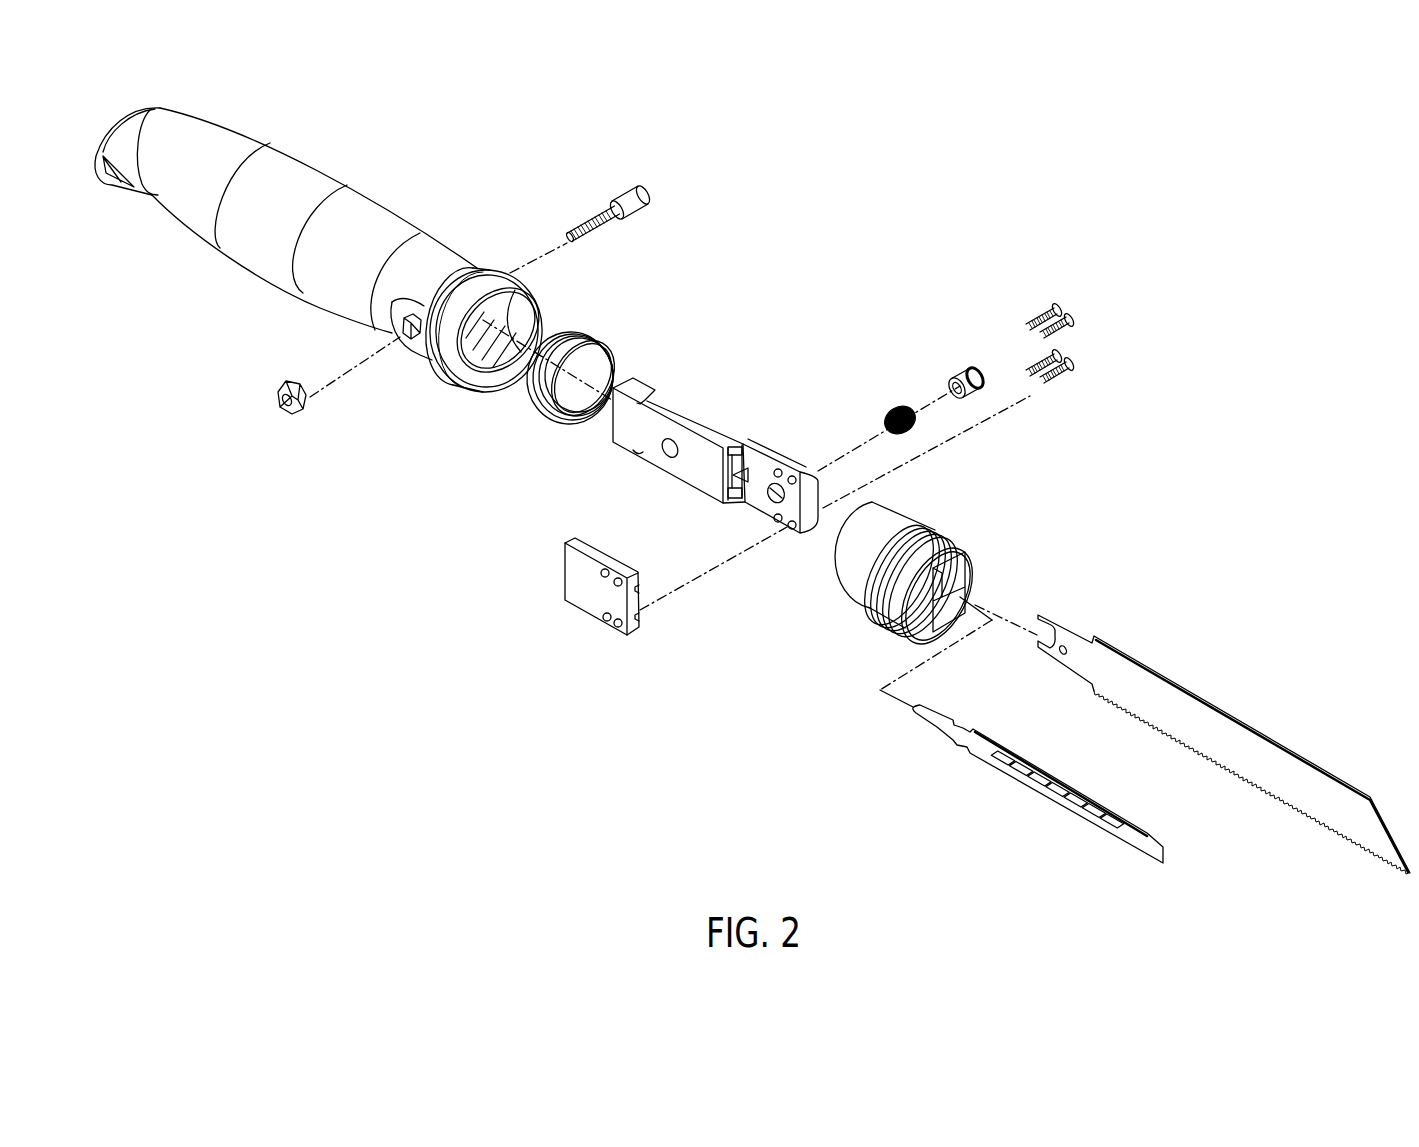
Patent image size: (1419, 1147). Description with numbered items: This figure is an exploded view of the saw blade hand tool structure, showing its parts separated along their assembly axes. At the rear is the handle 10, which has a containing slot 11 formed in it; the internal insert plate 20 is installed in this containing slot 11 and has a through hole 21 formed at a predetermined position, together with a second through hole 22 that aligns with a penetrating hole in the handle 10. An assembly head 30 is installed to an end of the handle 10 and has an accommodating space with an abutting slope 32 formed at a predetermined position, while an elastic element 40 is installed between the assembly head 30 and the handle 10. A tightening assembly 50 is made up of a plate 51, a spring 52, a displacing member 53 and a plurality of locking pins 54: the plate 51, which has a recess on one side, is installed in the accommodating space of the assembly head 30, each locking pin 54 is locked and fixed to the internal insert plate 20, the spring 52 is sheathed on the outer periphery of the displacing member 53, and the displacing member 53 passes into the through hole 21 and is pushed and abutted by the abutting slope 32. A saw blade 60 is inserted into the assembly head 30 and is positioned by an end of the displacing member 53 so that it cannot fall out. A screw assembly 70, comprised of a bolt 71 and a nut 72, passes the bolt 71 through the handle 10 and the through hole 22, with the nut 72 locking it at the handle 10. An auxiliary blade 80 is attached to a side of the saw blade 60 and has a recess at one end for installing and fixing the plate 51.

The handle 10 is at (247, 260).
The containing slot 11 is at (545, 302).
The internal insert plate 20 is at (681, 438).
The through hole 21 is at (770, 499).
The through hole 22 is at (663, 457).
The assembly head 30 is at (905, 518).
The abutting slope 32 is at (942, 575).
The elastic element 40 is at (583, 343).
The tightening assembly 50 is at (911, 296).
The plate 51 is at (590, 593).
The spring 52 is at (892, 407).
The displacing member 53 is at (962, 371).
The locking pins 54 is at (1042, 320).
The saw blade 60 is at (1163, 690).
The screw assembly 70 is at (552, 208).
The bolt 71 is at (590, 213).
The nut 72 is at (300, 413).
The auxiliary blade 80 is at (1000, 768).